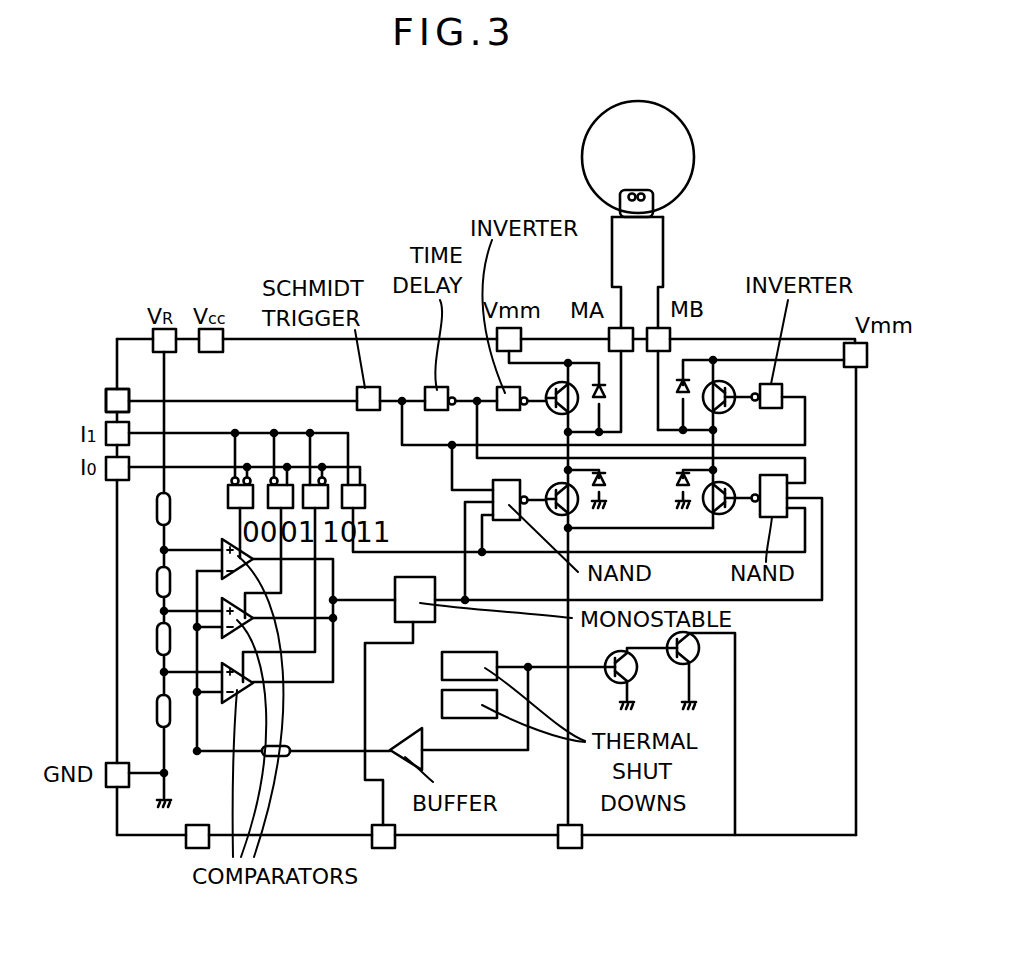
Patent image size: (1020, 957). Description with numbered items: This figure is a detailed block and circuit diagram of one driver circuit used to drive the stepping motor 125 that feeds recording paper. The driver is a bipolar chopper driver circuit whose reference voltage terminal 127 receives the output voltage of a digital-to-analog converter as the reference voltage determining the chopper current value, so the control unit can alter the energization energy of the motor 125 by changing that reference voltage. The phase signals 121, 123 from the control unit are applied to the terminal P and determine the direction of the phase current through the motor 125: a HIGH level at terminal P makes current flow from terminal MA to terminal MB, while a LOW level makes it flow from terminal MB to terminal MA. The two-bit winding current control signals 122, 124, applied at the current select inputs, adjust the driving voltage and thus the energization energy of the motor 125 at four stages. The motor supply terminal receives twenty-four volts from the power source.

The stepping motor 125 is at (696, 158).
The reference voltage terminal 127 is at (153, 328).
The phase signal 121 is at (106, 393).
The phase signal 123 is at (117, 400).
The two-bit winding current control signal 122 is at (73, 418).
The winding current control signal 124 is at (93, 517).